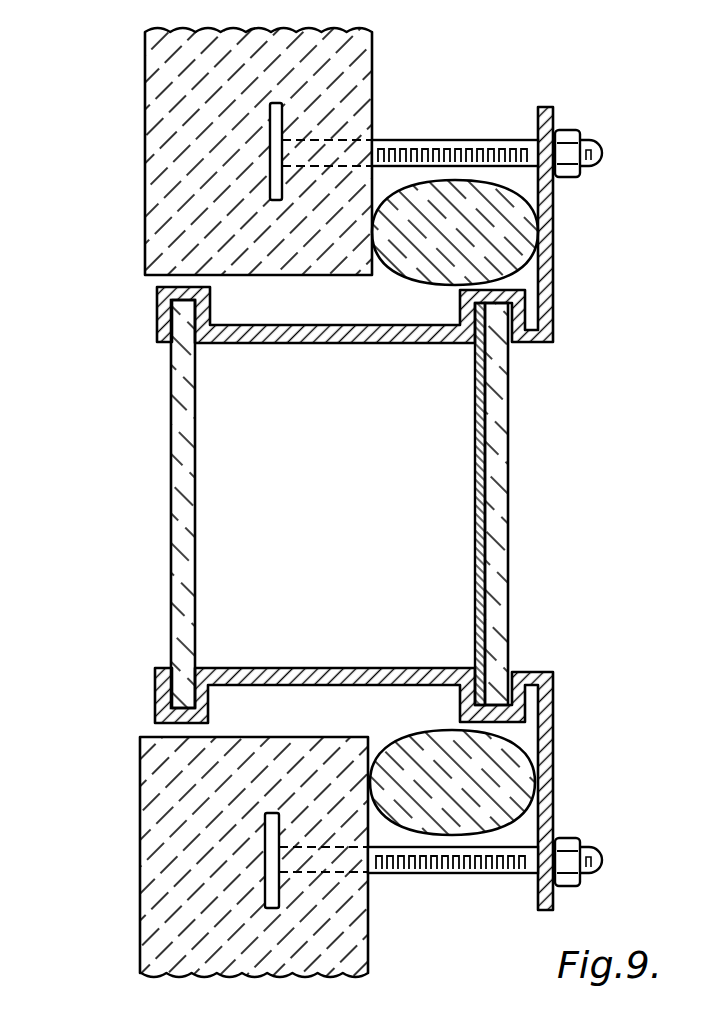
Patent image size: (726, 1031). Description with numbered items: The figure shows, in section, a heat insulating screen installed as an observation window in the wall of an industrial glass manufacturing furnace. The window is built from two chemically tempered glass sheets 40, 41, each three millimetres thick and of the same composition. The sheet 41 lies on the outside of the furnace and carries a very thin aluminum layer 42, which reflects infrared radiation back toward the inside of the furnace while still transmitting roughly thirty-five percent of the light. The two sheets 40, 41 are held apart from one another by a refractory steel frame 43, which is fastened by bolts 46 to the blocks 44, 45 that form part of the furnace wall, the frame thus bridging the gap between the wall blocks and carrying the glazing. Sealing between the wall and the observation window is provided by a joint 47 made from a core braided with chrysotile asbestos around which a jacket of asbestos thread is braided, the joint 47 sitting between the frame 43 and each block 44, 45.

The sheet 40 is at (182, 490).
The sheet 41 is at (495, 492).
The aluminum layer 42 is at (478, 495).
The refractory steel frame 43 is at (535, 680).
The block 44 is at (213, 864).
The block 45 is at (210, 103).
The bolt 46 is at (440, 140).
The joint 47 is at (490, 232).